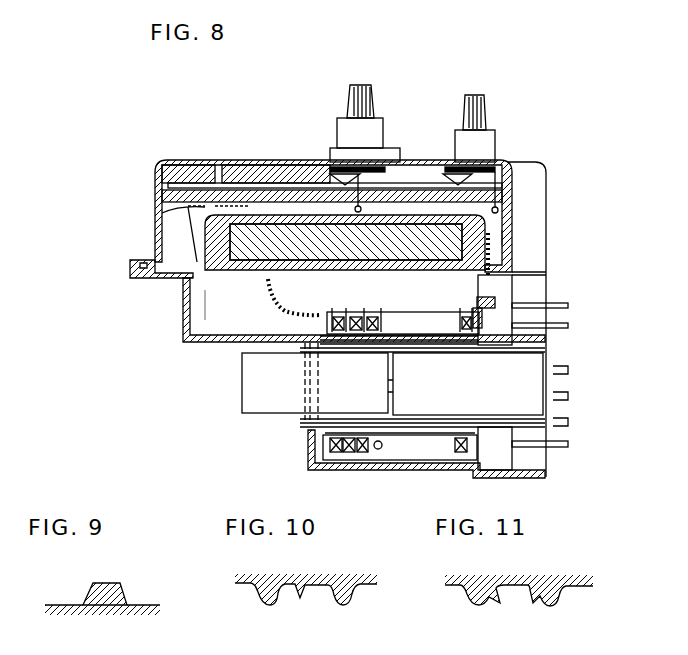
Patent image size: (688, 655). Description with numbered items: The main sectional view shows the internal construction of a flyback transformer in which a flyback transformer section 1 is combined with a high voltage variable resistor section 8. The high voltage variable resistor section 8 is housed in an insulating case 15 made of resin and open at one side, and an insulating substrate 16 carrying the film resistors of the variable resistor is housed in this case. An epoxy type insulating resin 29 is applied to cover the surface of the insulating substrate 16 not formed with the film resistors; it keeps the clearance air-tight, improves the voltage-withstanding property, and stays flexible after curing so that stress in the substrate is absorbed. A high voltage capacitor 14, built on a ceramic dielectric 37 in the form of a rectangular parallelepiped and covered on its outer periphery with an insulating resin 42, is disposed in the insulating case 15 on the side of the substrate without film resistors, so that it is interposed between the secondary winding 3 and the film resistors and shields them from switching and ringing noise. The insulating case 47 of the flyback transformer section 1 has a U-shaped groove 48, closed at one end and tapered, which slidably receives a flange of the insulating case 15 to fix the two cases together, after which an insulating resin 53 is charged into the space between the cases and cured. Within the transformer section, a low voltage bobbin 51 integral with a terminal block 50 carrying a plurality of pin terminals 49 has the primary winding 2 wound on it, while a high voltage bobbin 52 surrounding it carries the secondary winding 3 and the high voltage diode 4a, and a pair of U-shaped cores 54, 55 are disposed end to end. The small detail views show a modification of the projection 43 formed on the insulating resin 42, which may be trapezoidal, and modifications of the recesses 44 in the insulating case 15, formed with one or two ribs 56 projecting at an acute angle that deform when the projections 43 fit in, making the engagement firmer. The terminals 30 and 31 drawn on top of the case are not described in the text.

In FIG. 8, the flyback transformer section 1 is at (575, 380).
In FIG. 8, the primary winding 2 is at (308, 430).
In FIG. 8, the secondary winding 3 is at (355, 467).
In FIG. 8, the high voltage diode 4a is at (378, 449).
In FIG. 8, the high voltage variable resistor section 8 is at (549, 218).
In FIG. 8, the high voltage capacitor 14 is at (300, 276).
In FIG. 8, the insulating case 15 is at (172, 159).
In FIG. 10, the insulating case 15 is at (363, 585).
In FIG. 11, the insulating case 15 is at (582, 587).
In FIG. 8, the insulating substrate 16 is at (421, 197).
In FIG. 8, the insulating resin 29 is at (272, 165).
In FIG. 8, the terminal 30 is at (370, 94).
In FIG. 8, the terminal 31 is at (485, 107).
In FIG. 8, the dielectric 37 is at (165, 232).
In FIG. 8, the insulating resin 42 is at (512, 238).
In FIG. 9, the insulating resin 42 is at (145, 605).
In FIG. 9, the projection 43 is at (90, 588).
In FIG. 10, the recess 44 is at (275, 592).
In FIG. 11, the recess 44 is at (517, 588).
In FIG. 8, the insulating case 47 is at (182, 322).
In FIG. 8, the U-shaped groove 48 is at (147, 278).
In FIG. 8, the pin terminals 49 is at (568, 325).
In FIG. 8, the terminal block 50 is at (495, 296).
In FIG. 8, the low voltage bobbin 51 is at (333, 345).
In FIG. 8, the high voltage bobbin 52 is at (310, 467).
In FIG. 8, the insulating resin 53 is at (213, 325).
In FIG. 8, the U-shaped core 54 is at (533, 405).
In FIG. 8, the U-shaped core 55 is at (252, 400).
In FIG. 10, the rib 56 is at (305, 588).
In FIG. 11, the rib 56 is at (492, 595).